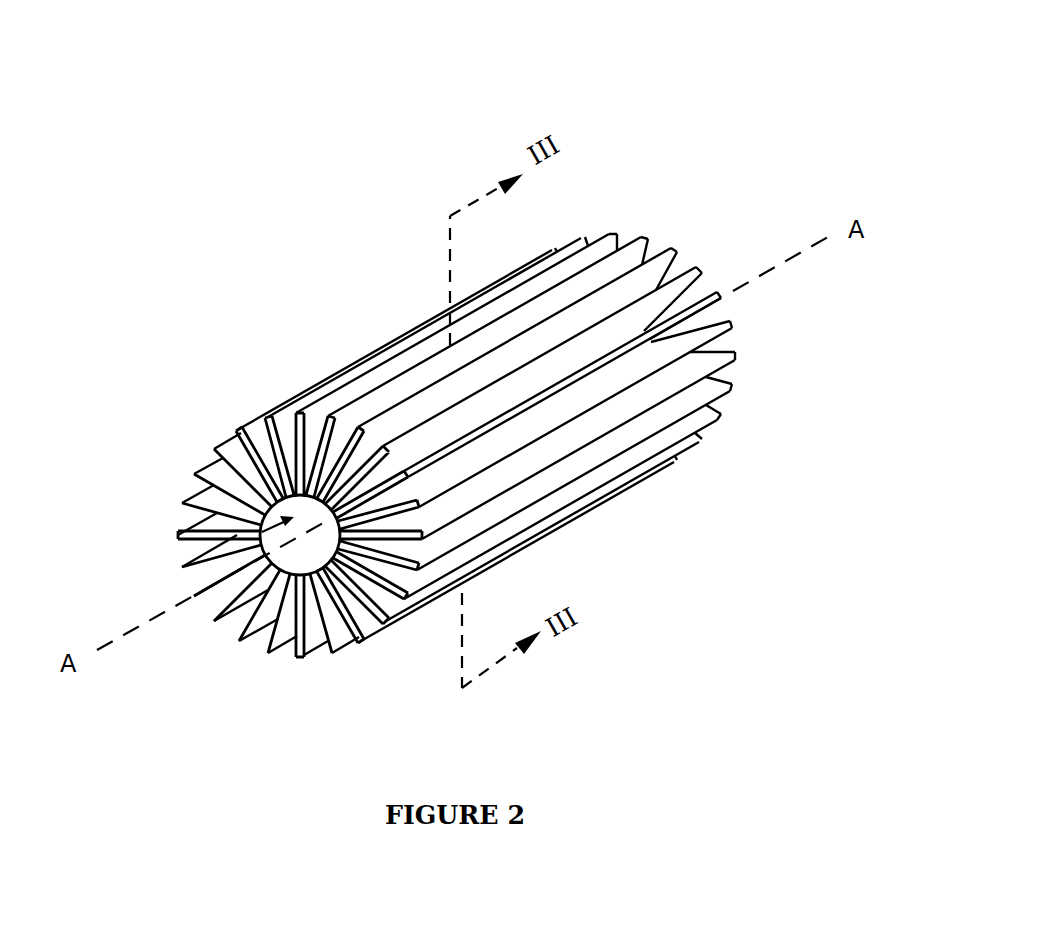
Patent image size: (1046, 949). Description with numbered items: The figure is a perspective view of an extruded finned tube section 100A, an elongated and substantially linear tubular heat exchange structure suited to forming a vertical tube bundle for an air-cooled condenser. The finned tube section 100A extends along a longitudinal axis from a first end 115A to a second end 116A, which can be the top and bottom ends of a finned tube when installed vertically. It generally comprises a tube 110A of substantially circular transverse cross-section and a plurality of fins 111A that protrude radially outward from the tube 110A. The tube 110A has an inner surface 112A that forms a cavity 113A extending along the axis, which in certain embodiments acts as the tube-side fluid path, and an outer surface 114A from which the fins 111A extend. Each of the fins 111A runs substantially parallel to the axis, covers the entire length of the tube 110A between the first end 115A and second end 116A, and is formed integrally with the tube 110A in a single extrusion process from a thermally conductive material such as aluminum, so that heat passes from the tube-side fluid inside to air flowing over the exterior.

The finned tube section 100A is at (702, 134).
The tube 110A is at (315, 566).
The fins 111A is at (648, 300).
The inner surface 112A is at (323, 560).
The cavity 113A is at (173, 532).
The outer surface 114A is at (378, 482).
The first end 115A is at (265, 595).
The second end 116A is at (642, 328).